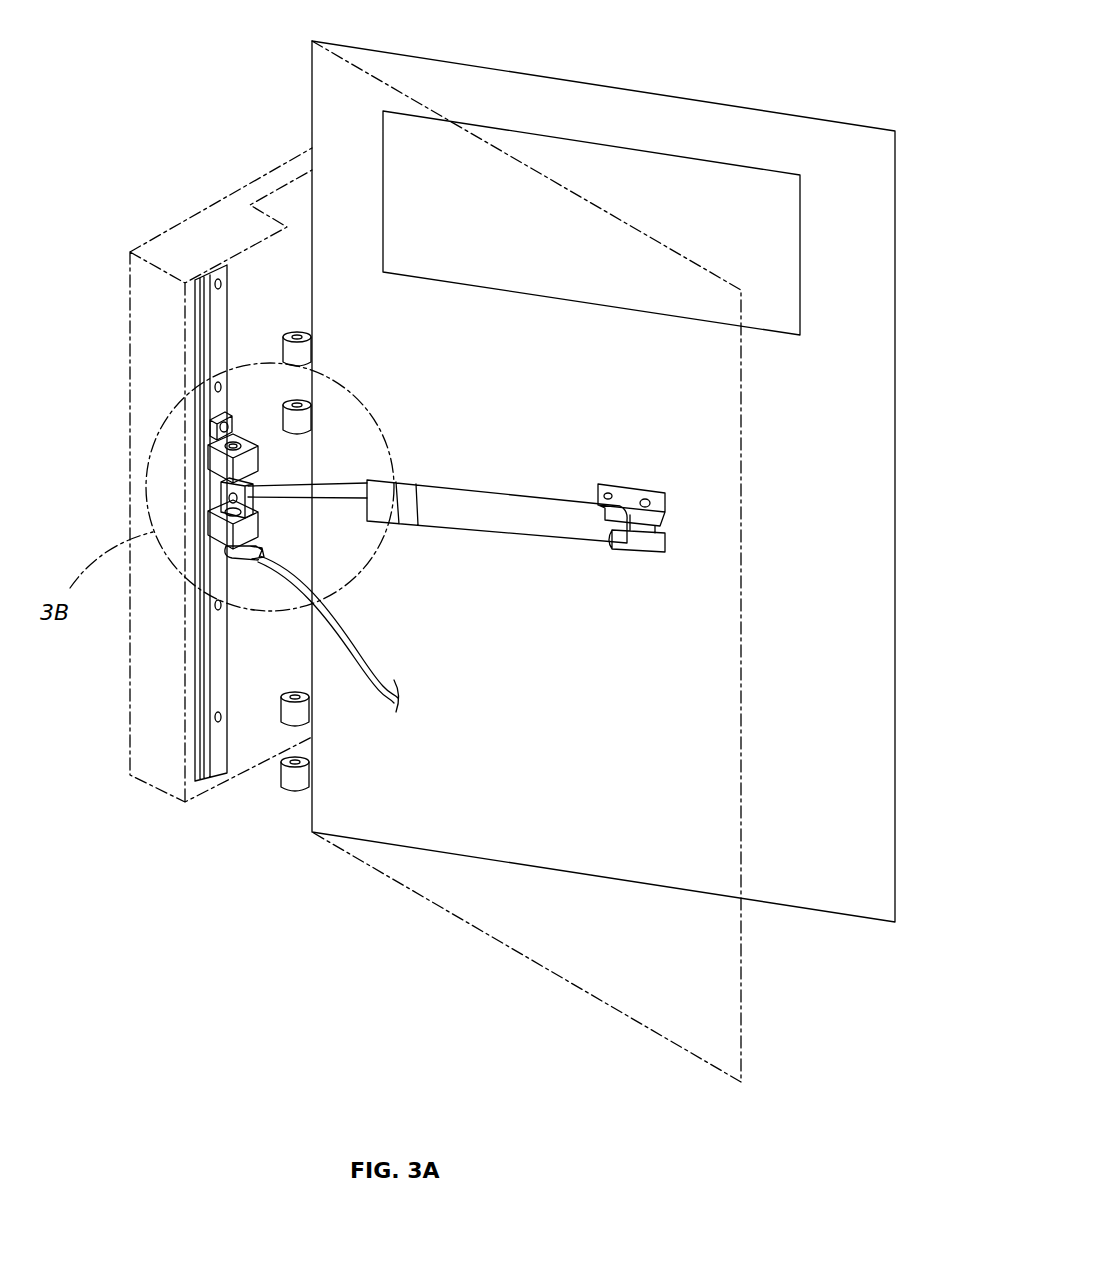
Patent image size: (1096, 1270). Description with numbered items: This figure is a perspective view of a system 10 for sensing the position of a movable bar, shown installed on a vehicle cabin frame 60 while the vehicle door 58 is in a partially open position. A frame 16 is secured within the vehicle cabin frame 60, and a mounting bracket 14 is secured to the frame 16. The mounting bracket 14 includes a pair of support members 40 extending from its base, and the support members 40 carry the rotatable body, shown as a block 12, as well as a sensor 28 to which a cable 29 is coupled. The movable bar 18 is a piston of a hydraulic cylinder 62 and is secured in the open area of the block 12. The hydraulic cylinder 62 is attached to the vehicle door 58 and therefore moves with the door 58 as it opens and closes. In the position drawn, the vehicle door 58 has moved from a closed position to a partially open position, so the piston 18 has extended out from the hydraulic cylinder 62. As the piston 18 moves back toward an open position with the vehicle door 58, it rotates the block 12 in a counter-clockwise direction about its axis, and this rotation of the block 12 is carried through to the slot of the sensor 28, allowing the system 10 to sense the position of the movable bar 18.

The system 10 is at (190, 856).
The rotatable body 12 is at (276, 512).
The mounting bracket 14 is at (242, 397).
The frame 16 is at (232, 297).
The movable bar 18 is at (353, 484).
The sensor 28 is at (252, 558).
The cable 29 is at (352, 678).
The support members 40 is at (258, 458).
The vehicle door 58 is at (705, 91).
The vehicle cabin frame 60 is at (167, 208).
The hydraulic cylinder 62 is at (502, 492).